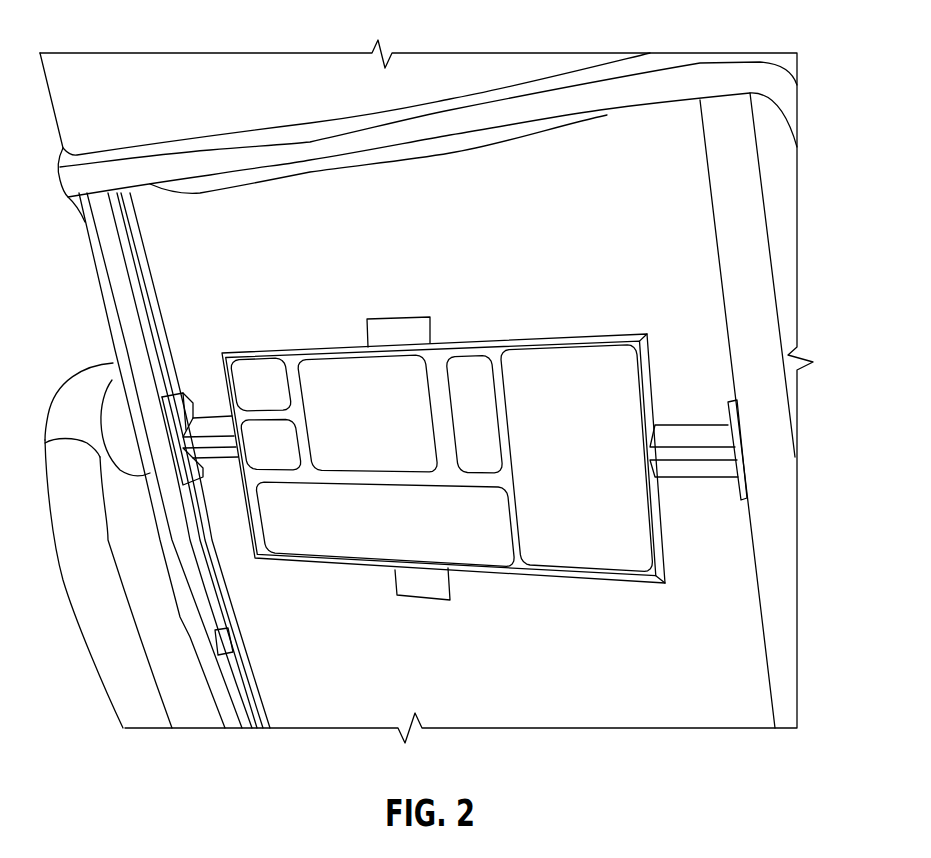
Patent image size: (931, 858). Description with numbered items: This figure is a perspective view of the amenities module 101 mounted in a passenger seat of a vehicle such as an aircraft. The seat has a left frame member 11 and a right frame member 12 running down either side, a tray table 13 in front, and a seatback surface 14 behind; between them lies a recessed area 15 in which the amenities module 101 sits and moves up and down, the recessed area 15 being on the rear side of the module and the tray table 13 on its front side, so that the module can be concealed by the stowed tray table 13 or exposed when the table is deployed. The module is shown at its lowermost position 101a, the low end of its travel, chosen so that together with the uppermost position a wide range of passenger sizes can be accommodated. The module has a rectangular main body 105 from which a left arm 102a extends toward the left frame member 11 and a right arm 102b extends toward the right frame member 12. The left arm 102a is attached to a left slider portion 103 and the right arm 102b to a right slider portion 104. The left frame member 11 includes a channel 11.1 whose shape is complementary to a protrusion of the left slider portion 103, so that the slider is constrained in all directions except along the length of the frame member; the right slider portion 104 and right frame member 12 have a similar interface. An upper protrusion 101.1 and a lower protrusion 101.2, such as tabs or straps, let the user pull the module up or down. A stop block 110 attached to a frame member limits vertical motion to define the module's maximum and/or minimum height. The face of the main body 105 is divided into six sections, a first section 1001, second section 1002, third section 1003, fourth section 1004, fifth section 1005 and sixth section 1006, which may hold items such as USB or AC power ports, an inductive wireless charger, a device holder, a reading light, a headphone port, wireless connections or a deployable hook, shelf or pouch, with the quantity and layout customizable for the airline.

The left frame member 11 is at (117, 272).
The channel 11.1 is at (140, 258).
The right frame member 12 is at (755, 267).
The tray table 13 is at (356, 104).
The seatback surface 14 is at (625, 157).
The recessed area 15 is at (563, 254).
The amenities module 101 is at (628, 560).
The upper protrusion 101.1 is at (407, 328).
The lower protrusion 101.2 is at (418, 587).
The lowermost position 101a is at (503, 555).
The left arm 102a is at (217, 450).
The right arm 102b is at (685, 437).
The left slider portion 103 is at (180, 407).
The right slider portion 104 is at (738, 487).
The main body 105 is at (612, 377).
The stop block 110 is at (233, 637).
The first section 1001 is at (243, 396).
The second section 1002 is at (349, 418).
The third section 1003 is at (448, 402).
The fourth section 1004 is at (552, 445).
The fifth section 1005 is at (253, 456).
The sixth section 1006 is at (355, 531).